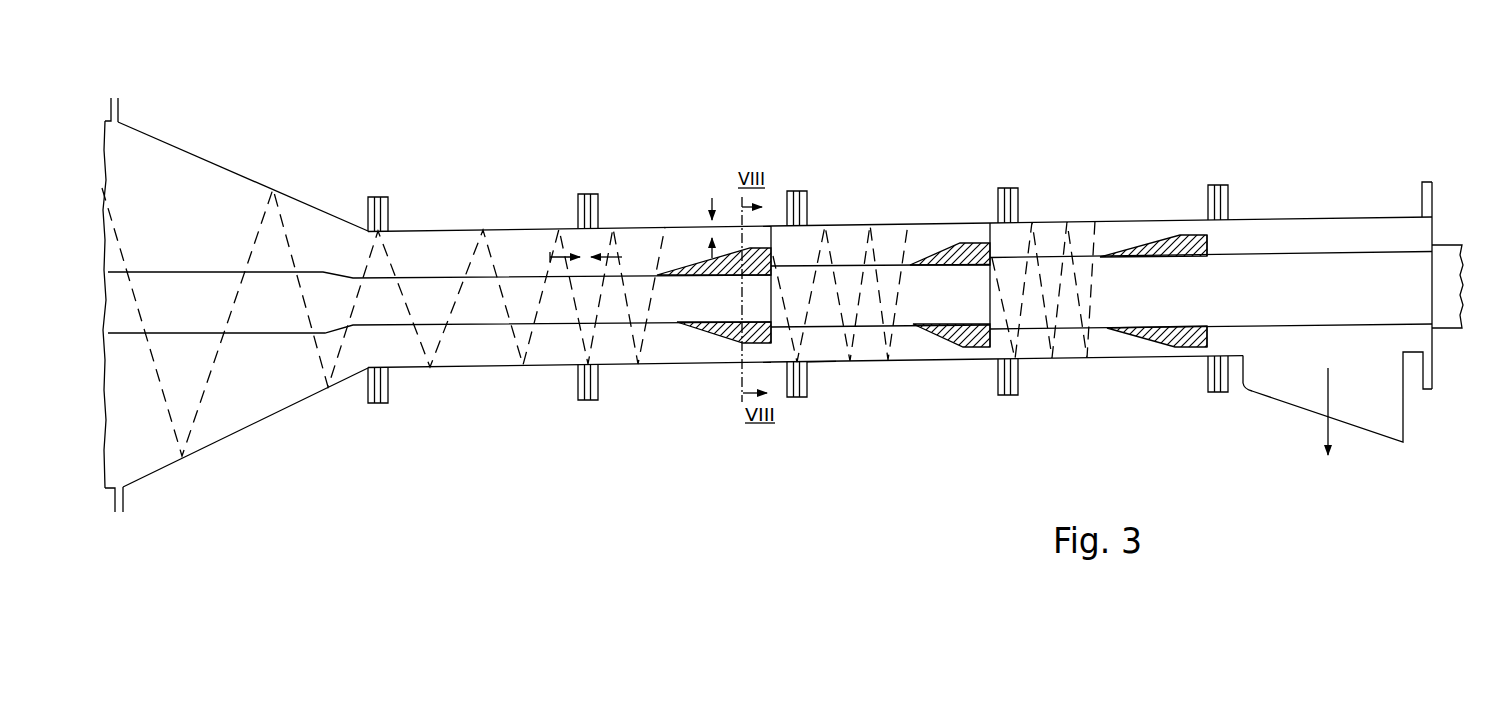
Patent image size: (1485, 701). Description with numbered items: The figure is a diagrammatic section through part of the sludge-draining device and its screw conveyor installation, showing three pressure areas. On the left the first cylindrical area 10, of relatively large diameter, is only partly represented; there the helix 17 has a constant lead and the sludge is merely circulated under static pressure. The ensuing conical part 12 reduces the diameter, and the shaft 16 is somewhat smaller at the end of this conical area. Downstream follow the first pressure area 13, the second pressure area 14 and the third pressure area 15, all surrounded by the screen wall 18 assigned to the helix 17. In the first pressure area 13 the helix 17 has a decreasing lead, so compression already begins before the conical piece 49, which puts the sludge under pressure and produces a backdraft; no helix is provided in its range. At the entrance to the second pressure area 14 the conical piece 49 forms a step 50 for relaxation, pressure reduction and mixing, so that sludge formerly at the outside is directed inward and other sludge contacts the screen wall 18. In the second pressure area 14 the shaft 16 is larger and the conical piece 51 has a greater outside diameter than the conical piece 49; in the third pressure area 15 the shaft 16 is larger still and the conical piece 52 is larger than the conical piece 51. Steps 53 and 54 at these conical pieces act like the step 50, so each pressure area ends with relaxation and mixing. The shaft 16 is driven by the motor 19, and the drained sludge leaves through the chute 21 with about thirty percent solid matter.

The first cylindrical area 10 is at (105, 121).
The conical part 12 is at (169, 144).
The first pressure area 13 is at (633, 208).
The second pressure area 14 is at (907, 187).
The third pressure area 15 is at (1115, 197).
The shaft 16 is at (320, 317).
The helix 17 is at (213, 373).
The screen wall 18 is at (836, 362).
The motor 19 is at (1446, 258).
The chute 21 is at (1373, 400).
The conical piece 49 is at (732, 252).
The step 50 is at (773, 226).
The conical piece 51 is at (952, 248).
The conical piece 52 is at (1162, 243).
The step 53 is at (990, 232).
The step 54 is at (1203, 220).